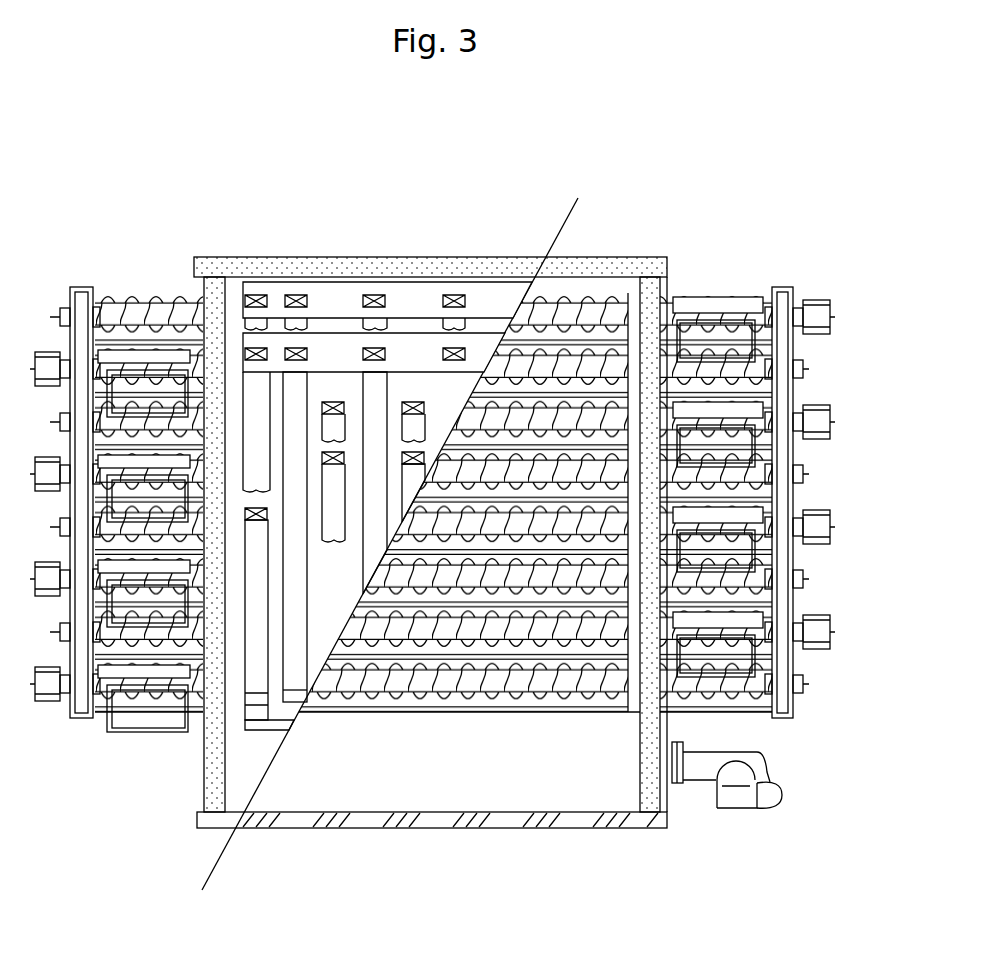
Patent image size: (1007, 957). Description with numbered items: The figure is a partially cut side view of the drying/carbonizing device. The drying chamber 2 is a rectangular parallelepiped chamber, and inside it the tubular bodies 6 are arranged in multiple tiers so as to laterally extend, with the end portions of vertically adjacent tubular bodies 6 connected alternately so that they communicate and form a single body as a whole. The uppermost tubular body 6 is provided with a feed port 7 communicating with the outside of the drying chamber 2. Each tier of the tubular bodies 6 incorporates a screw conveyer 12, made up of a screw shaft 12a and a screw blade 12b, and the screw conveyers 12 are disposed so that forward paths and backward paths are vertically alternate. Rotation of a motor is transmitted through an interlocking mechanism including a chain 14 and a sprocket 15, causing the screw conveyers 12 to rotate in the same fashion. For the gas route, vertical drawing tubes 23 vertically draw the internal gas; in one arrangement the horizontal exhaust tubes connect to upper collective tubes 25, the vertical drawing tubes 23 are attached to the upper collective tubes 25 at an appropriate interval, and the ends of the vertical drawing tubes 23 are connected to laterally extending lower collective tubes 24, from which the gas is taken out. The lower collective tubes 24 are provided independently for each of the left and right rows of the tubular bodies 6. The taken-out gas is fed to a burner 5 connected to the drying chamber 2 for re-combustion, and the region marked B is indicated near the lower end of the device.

The drying chamber 2 is at (348, 768).
The burner 5 is at (708, 780).
The tubular body 6 is at (613, 345).
The feed port 7 is at (722, 300).
The screw conveyer 12 is at (588, 305).
The screw shaft 12a is at (492, 692).
The screw blade 12b is at (463, 683).
The chain 14 is at (815, 300).
The sprocket 15 is at (832, 318).
The vertical drawing tube 23 is at (253, 625).
The lower collective tube 24 is at (282, 722).
The upper collective tube 25 is at (348, 295).
The section B is at (728, 710).